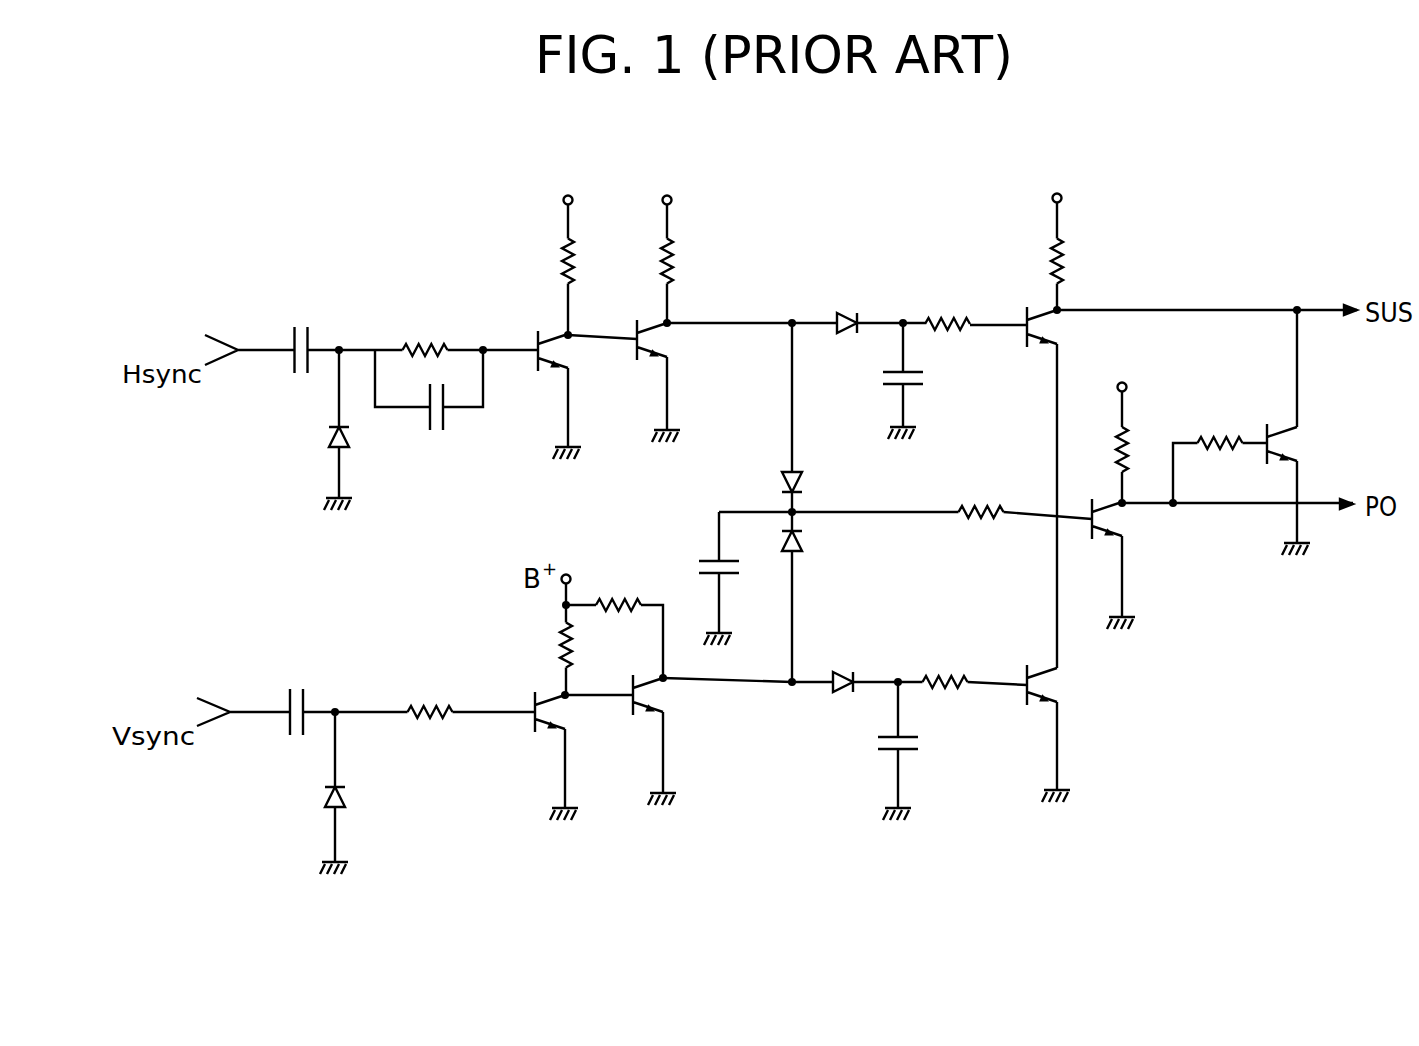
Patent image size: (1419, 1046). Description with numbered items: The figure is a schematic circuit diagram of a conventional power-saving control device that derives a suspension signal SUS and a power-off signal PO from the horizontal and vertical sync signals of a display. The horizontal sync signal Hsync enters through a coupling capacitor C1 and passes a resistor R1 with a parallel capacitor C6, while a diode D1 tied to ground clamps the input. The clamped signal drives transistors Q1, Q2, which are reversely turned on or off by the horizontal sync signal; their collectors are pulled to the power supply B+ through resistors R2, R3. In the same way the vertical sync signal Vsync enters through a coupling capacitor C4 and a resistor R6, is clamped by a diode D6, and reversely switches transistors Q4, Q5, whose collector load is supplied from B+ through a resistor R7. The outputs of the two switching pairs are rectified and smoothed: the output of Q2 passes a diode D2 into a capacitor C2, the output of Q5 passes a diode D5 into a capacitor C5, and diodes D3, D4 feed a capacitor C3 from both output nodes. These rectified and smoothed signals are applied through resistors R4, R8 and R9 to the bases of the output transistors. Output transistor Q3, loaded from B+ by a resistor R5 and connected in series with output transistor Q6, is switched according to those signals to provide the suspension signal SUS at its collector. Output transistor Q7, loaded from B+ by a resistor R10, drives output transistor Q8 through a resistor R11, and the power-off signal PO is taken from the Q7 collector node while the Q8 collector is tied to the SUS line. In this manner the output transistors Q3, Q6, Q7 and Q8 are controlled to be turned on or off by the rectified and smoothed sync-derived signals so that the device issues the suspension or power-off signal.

The coupling capacitor C1 is at (302, 333).
The resistor R1 is at (425, 334).
The capacitor C6 is at (435, 423).
The diode D1 is at (320, 430).
The transistor Q1 is at (571, 352).
The resistor R2 is at (589, 258).
The transistor Q2 is at (669, 341).
The resistor R3 is at (688, 252).
The diode D2 is at (848, 306).
The capacitor C2 is at (918, 381).
The resistor R4 is at (947, 308).
The resistor R5 is at (1078, 244).
The output transistor Q3 is at (1061, 330).
The diode D3 is at (769, 484).
The diode D4 is at (809, 544).
The capacitor C3 is at (699, 578).
The resistor R9 is at (981, 498).
The resistor R10 is at (1120, 435).
The output transistor Q7 is at (1125, 519).
The resistor R11 is at (1220, 428).
The output transistor Q8 is at (1298, 447).
The diode D5 is at (845, 666).
The resistor R8 is at (945, 667).
The output transistor Q6 is at (1055, 688).
The capacitor C5 is at (877, 751).
The coupling capacitor C4 is at (297, 695).
The resistor R6 is at (430, 696).
The diode D6 is at (314, 793).
The transistor Q4 is at (561, 713).
The transistor Q5 is at (663, 698).
The resistor R7 is at (614, 625).